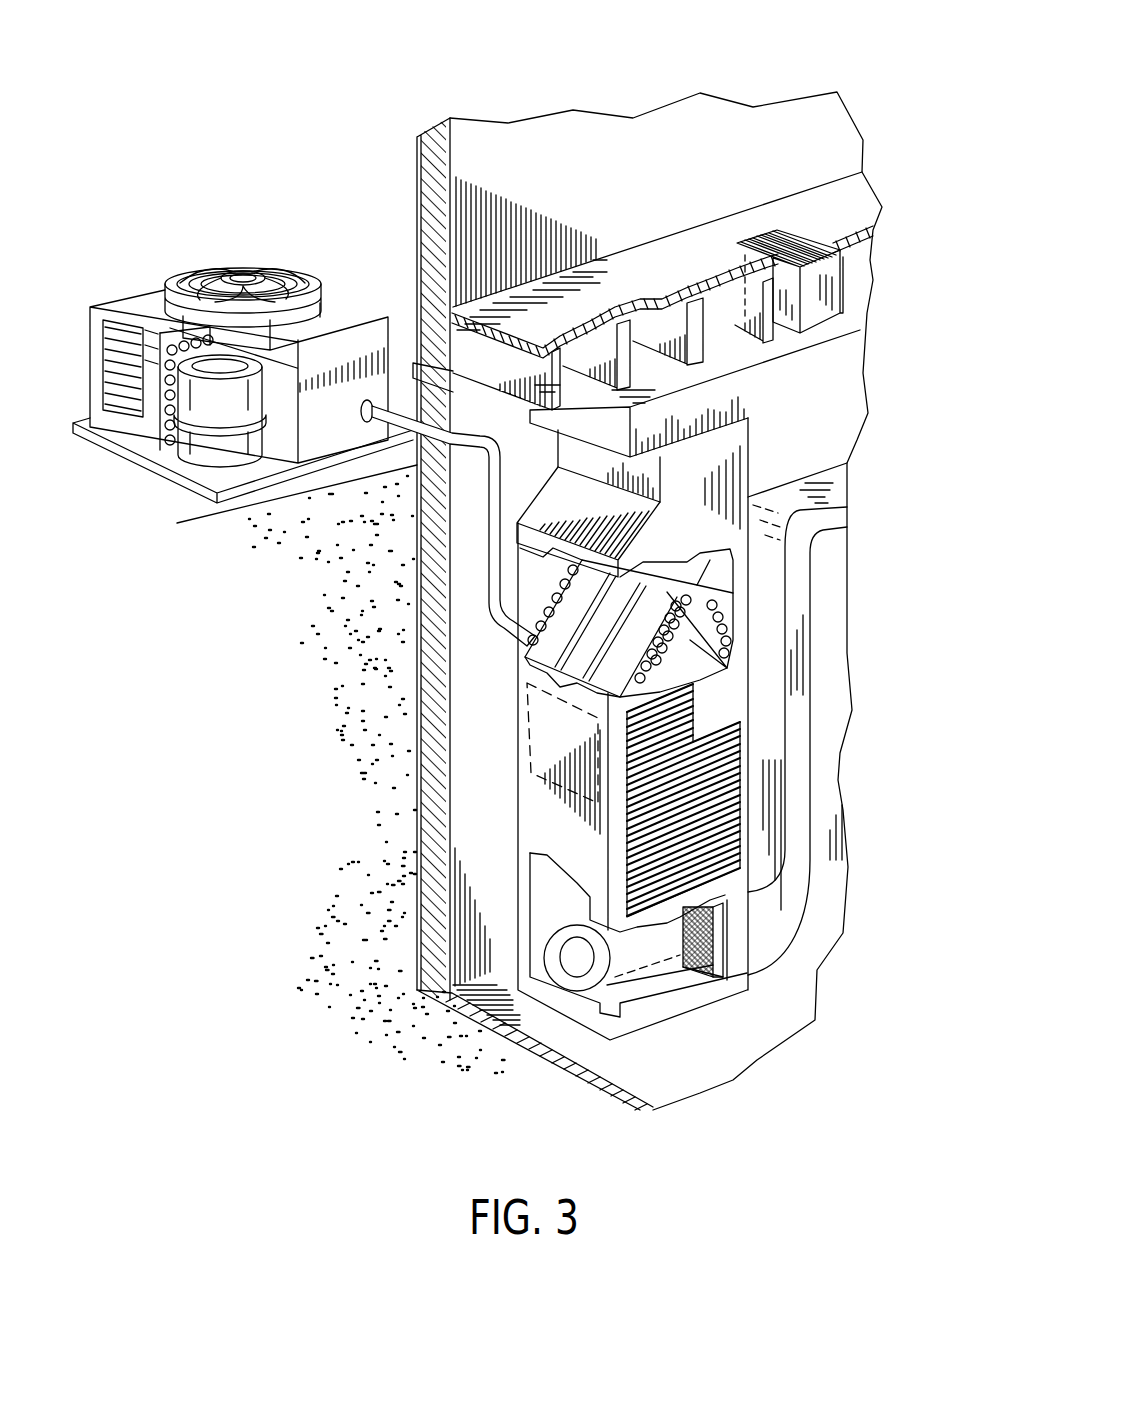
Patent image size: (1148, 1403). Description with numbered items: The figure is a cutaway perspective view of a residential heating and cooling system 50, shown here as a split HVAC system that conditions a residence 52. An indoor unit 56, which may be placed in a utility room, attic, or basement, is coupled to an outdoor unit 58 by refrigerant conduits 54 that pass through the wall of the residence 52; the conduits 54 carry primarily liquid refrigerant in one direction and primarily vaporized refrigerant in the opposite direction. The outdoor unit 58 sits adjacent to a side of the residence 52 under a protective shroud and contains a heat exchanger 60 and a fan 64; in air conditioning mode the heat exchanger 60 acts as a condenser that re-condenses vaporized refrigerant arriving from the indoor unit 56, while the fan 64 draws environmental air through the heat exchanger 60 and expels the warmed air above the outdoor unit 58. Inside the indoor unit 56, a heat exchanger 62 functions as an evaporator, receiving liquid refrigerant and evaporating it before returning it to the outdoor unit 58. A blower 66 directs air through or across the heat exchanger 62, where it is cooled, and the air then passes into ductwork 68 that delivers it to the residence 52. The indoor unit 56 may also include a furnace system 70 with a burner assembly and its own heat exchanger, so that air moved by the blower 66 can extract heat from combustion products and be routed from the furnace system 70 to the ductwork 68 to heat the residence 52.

The residential heating and cooling system 50 is at (242, 90).
The residence 52 is at (557, 141).
The refrigerant conduits 54 is at (462, 535).
The indoor unit 56 is at (497, 785).
The outdoor unit 58 is at (200, 260).
The heat exchanger 60 is at (170, 342).
The heat exchanger 62 is at (582, 653).
The fan 64 is at (260, 270).
The blower 66 is at (572, 977).
The ductwork 68 is at (795, 375).
The furnace system 70 is at (527, 745).